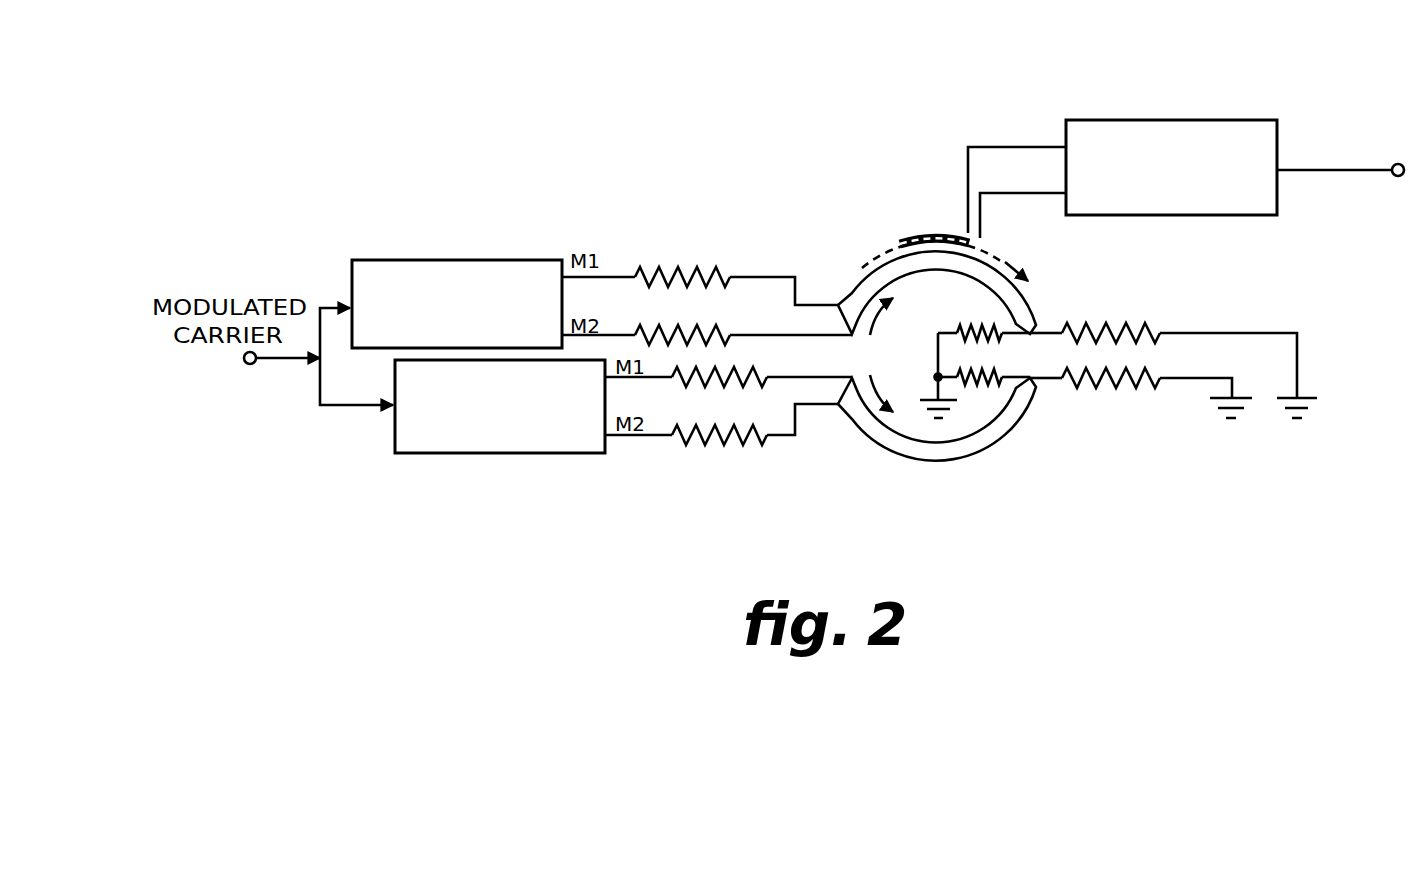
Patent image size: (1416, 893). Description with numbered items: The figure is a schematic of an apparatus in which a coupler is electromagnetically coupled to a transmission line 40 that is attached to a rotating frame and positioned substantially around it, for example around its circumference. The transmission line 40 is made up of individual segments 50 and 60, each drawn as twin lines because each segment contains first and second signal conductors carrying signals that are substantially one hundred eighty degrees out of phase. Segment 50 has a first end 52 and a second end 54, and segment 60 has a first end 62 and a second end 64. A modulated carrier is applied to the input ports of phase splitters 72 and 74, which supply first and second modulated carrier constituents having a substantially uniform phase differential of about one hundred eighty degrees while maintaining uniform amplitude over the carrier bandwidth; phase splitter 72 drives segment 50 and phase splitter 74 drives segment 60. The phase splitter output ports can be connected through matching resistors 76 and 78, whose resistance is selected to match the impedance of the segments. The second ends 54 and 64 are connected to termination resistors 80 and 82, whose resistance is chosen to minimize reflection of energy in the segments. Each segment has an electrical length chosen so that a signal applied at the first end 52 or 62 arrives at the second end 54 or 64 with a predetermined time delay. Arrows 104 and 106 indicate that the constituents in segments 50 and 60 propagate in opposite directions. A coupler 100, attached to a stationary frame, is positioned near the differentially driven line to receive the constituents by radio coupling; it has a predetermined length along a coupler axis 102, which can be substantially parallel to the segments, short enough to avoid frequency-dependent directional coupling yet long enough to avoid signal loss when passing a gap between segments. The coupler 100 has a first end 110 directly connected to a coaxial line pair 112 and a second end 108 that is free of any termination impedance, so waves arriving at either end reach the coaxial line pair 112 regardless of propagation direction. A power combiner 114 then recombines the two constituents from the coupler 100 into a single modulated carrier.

The transmission line 40 is at (954, 341).
The individual segment 50 is at (868, 255).
The first end 52 is at (838, 303).
The second end 54 is at (1034, 326).
The individual segment 60 is at (930, 466).
The first end 62 is at (838, 406).
The second end 64 is at (1034, 387).
The phase splitter 72 is at (395, 262).
The phase splitter 74 is at (395, 432).
The matching resistors 76 is at (720, 332).
The matching resistors 78 is at (692, 378).
The termination resistors 80 is at (1093, 333).
The termination resistors 82 is at (1140, 383).
The coupler 100 is at (967, 232).
The coupler axis 102 is at (1000, 252).
The arrow 104 is at (897, 316).
The arrow 106 is at (890, 372).
The second end 108 is at (903, 233).
The first end 110 is at (938, 208).
The coaxial line pair 112 is at (993, 190).
The power combiner 114 is at (1120, 120).